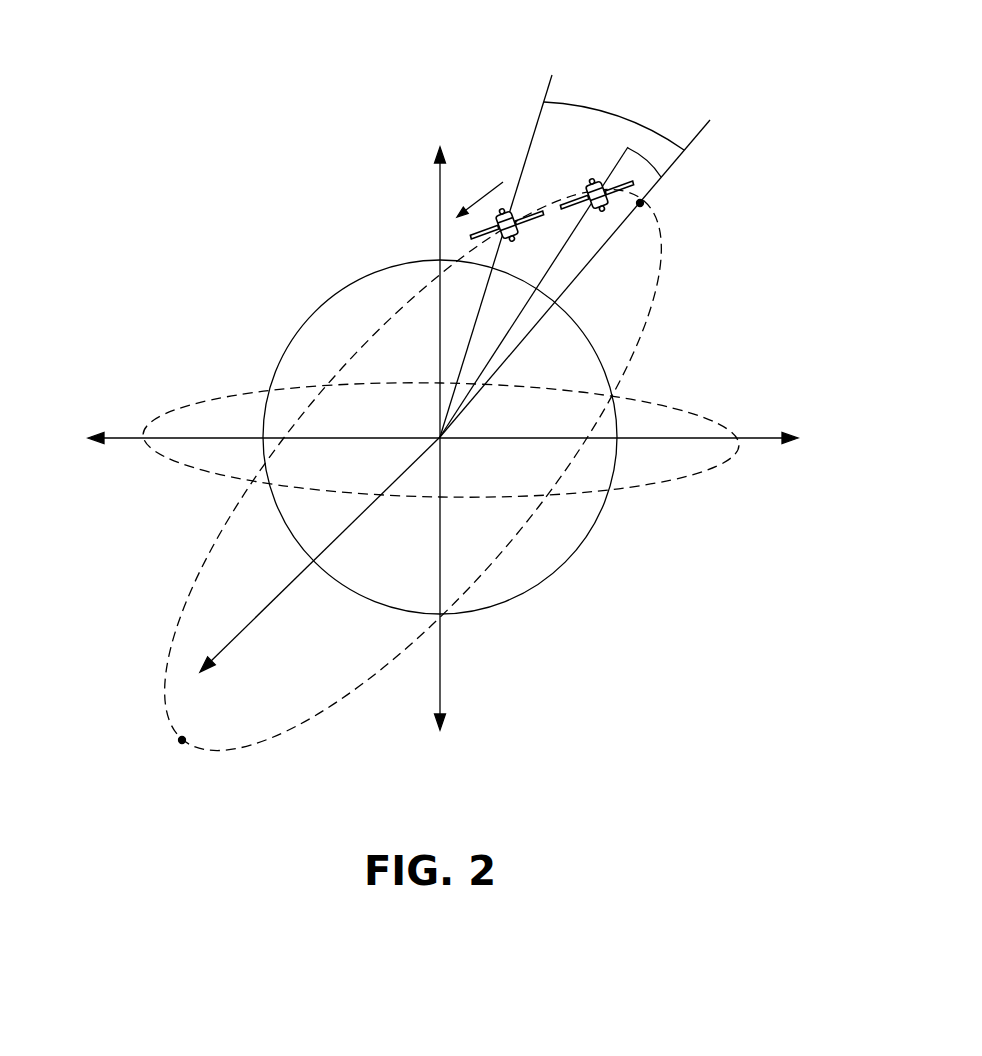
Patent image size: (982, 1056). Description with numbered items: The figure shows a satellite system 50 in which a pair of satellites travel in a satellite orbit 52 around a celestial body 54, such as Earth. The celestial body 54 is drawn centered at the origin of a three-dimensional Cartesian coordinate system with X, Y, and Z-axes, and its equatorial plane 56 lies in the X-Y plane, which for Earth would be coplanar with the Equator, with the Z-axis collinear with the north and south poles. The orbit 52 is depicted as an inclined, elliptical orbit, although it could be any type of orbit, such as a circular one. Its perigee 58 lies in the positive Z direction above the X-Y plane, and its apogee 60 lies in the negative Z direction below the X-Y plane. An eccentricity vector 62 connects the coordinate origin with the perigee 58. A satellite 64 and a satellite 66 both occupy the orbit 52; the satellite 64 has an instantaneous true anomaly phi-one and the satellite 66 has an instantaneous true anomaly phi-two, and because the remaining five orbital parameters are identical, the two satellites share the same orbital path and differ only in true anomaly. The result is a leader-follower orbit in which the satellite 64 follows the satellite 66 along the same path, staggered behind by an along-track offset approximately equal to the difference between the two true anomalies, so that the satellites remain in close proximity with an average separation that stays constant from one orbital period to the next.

The satellite system 50 is at (446, 419).
The satellite orbit 52 is at (656, 244).
The celestial body 54 is at (440, 437).
The equatorial plane 56 is at (667, 478).
The perigee 58 is at (663, 193).
The apogee 60 is at (166, 758).
The eccentricity vector 62 is at (565, 293).
The satellite 64 is at (585, 185).
The satellite 66 is at (515, 237).